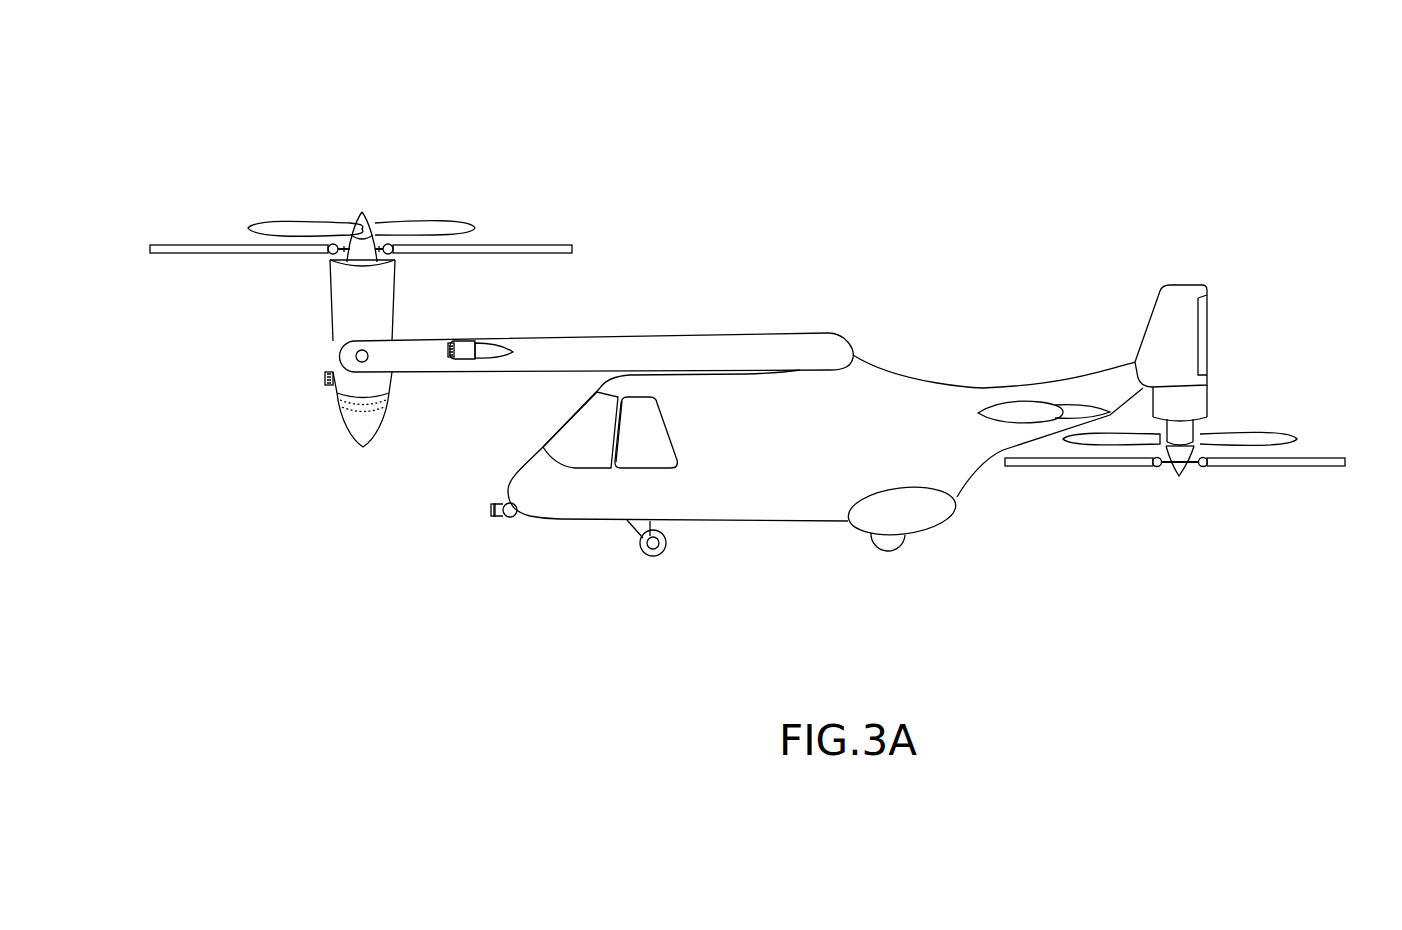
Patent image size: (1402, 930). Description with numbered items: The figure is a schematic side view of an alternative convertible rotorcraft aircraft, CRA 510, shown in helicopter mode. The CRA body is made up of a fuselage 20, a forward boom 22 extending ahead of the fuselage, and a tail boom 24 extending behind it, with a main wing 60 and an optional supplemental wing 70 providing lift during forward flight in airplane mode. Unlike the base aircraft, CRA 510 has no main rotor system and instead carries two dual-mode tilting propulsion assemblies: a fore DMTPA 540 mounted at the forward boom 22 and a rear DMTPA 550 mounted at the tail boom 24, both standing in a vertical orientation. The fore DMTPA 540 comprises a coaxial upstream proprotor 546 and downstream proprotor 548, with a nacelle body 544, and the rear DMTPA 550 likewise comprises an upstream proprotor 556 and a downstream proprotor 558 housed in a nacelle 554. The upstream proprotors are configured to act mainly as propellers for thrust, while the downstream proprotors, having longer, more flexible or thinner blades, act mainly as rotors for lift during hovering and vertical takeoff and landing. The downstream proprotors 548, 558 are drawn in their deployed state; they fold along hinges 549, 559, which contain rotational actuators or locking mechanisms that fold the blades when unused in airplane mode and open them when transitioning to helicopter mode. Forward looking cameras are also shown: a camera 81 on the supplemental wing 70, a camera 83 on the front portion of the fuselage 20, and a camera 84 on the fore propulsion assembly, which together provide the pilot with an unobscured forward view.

The alternative CRA 510 is at (338, 97).
The upstream proprotor 546 is at (280, 222).
The downstream proprotor 548 is at (210, 256).
The hinge 549 is at (332, 254).
The camera 84 is at (325, 377).
The fore DMTPA 540 is at (322, 407).
The nacelle 544 is at (383, 414).
The camera 81 is at (467, 338).
The supplemental wing 70 is at (466, 362).
The forward boom 22 is at (545, 372).
The fuselage 20 is at (878, 367).
The camera 83 is at (508, 520).
The tail boom 24 is at (1067, 378).
The main wing 60 is at (1030, 422).
The rear DMTPA 550 is at (1218, 391).
The nacelle 554 is at (1210, 405).
The upstream proprotor 556 is at (1283, 442).
The downstream proprotor 558 is at (1318, 470).
The hinge 559 is at (1203, 468).